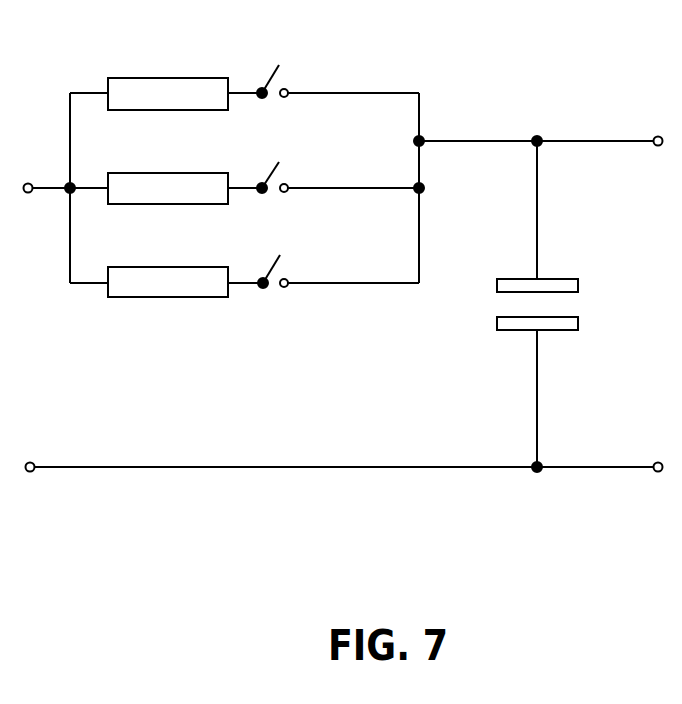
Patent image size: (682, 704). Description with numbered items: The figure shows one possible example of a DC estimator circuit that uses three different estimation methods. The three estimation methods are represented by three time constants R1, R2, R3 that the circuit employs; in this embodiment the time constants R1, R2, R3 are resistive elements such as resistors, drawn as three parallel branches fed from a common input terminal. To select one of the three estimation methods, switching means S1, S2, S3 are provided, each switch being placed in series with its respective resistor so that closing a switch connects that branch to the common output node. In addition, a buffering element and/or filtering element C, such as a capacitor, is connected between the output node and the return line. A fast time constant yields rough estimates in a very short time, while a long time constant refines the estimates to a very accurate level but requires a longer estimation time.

The time constant R1 is at (168, 94).
The time constant R2 is at (168, 188).
The time constant R3 is at (168, 282).
The switching means S1 is at (273, 75).
The switching means S2 is at (273, 170).
The switching means S3 is at (274, 276).
The buffering element and/or filtering element C is at (578, 304).